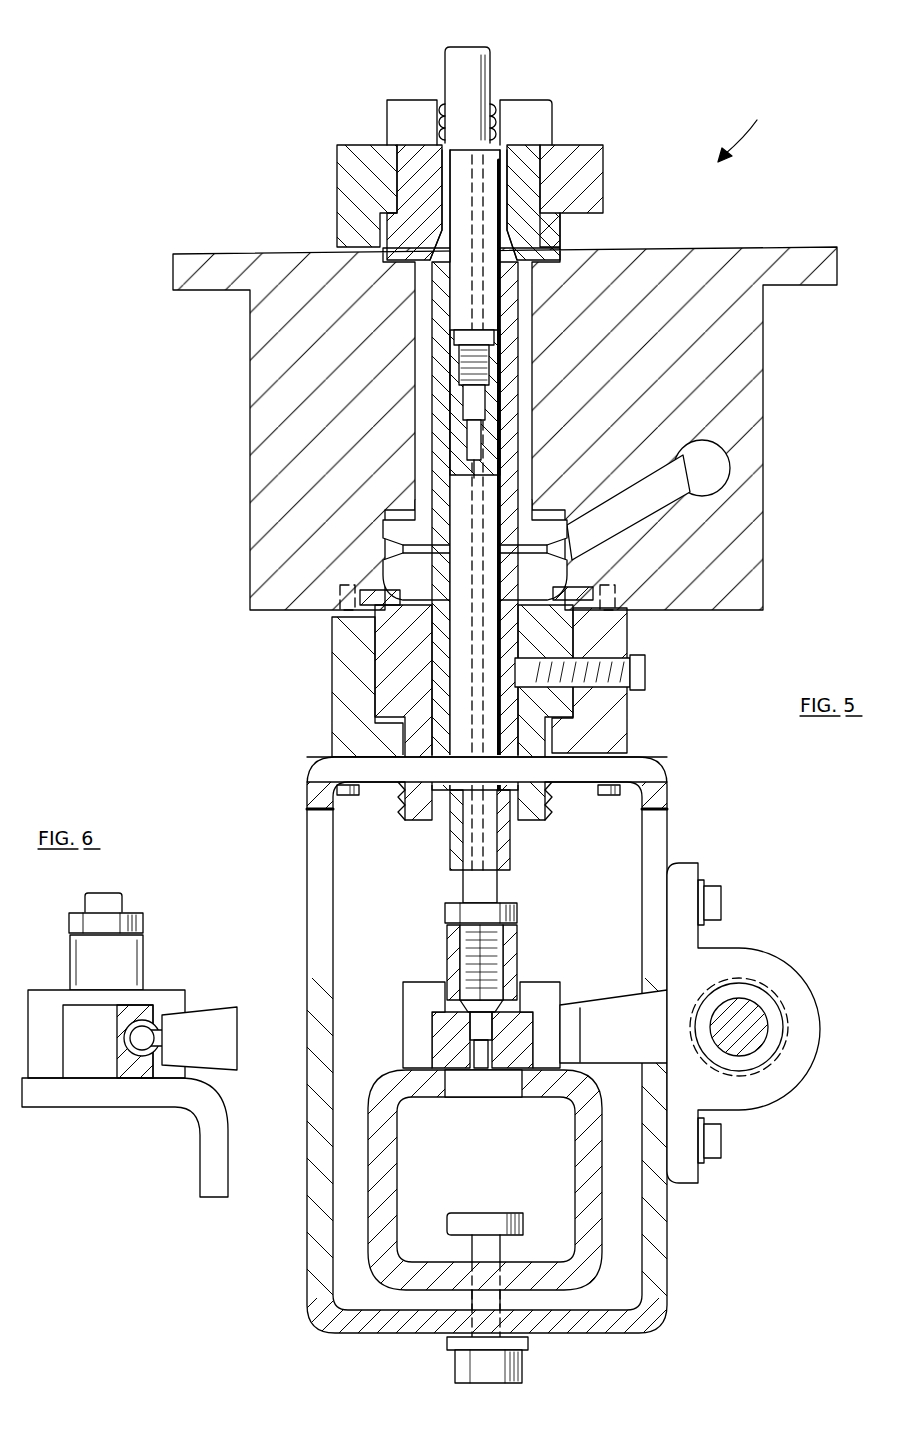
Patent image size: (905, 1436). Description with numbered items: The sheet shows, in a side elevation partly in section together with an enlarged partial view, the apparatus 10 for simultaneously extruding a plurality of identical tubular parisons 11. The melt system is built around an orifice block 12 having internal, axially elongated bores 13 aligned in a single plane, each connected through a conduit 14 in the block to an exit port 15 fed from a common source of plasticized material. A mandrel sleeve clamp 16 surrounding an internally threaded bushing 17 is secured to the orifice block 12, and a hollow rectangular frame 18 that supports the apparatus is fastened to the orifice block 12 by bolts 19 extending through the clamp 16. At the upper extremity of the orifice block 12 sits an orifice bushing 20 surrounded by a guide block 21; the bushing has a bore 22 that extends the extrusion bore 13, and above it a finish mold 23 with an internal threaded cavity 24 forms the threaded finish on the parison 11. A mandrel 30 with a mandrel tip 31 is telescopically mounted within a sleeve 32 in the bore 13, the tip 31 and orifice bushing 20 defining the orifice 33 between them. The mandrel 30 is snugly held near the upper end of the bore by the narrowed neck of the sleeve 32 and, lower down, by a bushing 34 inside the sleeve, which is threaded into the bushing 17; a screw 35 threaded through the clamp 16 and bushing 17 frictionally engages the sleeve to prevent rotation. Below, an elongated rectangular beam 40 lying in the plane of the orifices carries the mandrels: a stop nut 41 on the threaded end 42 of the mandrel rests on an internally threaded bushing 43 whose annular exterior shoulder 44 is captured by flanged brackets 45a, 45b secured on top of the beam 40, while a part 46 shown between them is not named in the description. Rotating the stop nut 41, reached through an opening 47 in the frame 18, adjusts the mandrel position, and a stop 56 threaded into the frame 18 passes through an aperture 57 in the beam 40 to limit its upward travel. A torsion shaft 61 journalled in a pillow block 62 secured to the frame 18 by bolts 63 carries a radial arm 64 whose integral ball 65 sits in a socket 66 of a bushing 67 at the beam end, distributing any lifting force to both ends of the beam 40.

In FIG. 5, the apparatus 10 is at (753, 134).
In FIG. 5, the tubular parison 11 is at (480, 74).
In FIG. 5, the orifice block 12 is at (248, 374).
In FIG. 5, the bore 13 is at (414, 322).
In FIG. 5, the conduit 14 is at (648, 492).
In FIG. 5, the exit port 15 is at (726, 456).
In FIG. 5, the mandrel sleeve clamp 16 is at (345, 718).
In FIG. 5, the internally threaded bushing 17 is at (420, 814).
In FIG. 5, the hollow rectangular frame 18 is at (652, 796).
In FIG. 6, the hollow rectangular frame 18 is at (200, 1133).
In FIG. 5, the bolts 19 is at (345, 800).
In FIG. 5, the orifice bushing 20 is at (523, 164).
In FIG. 5, the guide block 21 is at (590, 164).
In FIG. 5, the bore 22 is at (507, 199).
In FIG. 5, the finish mold 23 is at (540, 110).
In FIG. 5, the internal threaded cavity 24 is at (500, 105).
In FIG. 5, the mandrel 30 is at (447, 177).
In FIG. 5, the mandrel tip 31 is at (457, 152).
In FIG. 5, the sleeve 32 is at (432, 267).
In FIG. 5, the orifice 33 is at (500, 193).
In FIG. 5, the bushing 34 is at (461, 872).
In FIG. 5, the screw 35 is at (647, 677).
In FIG. 5, the elongated rectangular beam 40 is at (382, 1089).
In FIG. 5, the stop nut 41 is at (519, 912).
In FIG. 6, the stop nut 41 is at (142, 919).
In FIG. 5, the threaded end 42 is at (466, 938).
In FIG. 5, the internally threaded bushing 43 is at (452, 959).
In FIG. 6, the internally threaded bushing 43 is at (145, 958).
In FIG. 5, the annular exterior shoulder 44 is at (535, 1003).
In FIG. 5, the flanged bracket 45a is at (410, 1016).
In FIG. 5, the flanged bracket 45b is at (537, 986).
In FIG. 5, the spacer 46 is at (490, 1090).
In FIG. 5, the opening 47 is at (650, 834).
In FIG. 5, the stop 56 is at (495, 1215).
In FIG. 5, the aperture 57 is at (503, 1254).
In FIG. 5, the torsion shaft 61 is at (750, 1027).
In FIG. 5, the pillow block 62 is at (788, 968).
In FIG. 5, the bolts 63 is at (723, 906).
In FIG. 5, the radial arm 64 is at (602, 1037).
In FIG. 6, the radial arm 64 is at (232, 1037).
In FIG. 6, the integral ball 65 is at (152, 1038).
In FIG. 6, the socket 66 is at (125, 1030).
In FIG. 6, the bushing 67 is at (86, 1067).